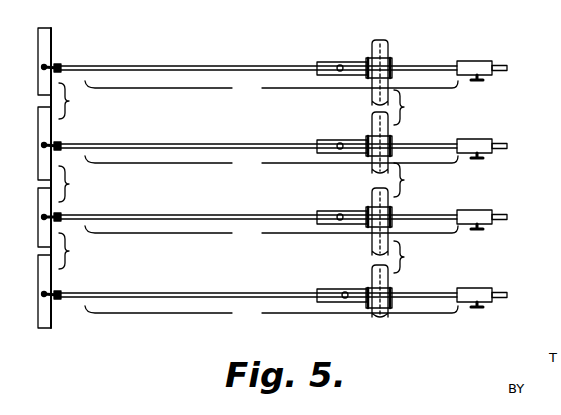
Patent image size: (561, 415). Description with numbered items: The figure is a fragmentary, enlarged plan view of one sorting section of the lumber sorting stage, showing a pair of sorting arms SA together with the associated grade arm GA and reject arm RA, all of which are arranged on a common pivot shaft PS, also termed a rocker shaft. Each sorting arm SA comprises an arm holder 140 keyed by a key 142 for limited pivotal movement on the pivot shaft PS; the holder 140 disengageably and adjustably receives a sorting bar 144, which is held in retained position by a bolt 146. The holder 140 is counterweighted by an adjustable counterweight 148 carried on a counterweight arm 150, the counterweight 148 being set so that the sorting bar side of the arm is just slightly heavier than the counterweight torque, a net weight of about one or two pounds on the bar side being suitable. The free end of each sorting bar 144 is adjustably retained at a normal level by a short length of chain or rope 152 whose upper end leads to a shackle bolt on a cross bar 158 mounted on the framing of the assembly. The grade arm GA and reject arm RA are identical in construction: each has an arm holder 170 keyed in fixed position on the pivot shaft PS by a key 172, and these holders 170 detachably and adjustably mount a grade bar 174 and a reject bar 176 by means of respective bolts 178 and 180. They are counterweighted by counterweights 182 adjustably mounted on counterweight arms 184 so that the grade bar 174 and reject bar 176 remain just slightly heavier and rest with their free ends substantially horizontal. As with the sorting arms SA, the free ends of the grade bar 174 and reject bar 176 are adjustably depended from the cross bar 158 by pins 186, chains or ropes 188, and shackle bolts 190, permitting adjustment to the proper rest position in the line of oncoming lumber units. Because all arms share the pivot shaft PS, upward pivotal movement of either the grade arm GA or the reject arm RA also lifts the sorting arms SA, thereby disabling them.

The arm holder 140 is at (372, 136).
The key 142 is at (396, 140).
The sorting bar 144 is at (213, 144).
The bolt 146 is at (340, 140).
The adjustable counterweight 148 is at (482, 140).
The counterweight arm 150 is at (430, 215).
The chain or rope 152 is at (53, 143).
The cross bar 158 is at (77, 176).
The arm holder 170 is at (370, 58).
The key 172 is at (396, 62).
The grade bar 174 is at (213, 293).
The reject bar 176 is at (210, 66).
The bolt 178 is at (345, 298).
The bolt 180 is at (325, 61).
The counterweight 182 is at (488, 61).
The counterweight arm 184 is at (502, 70).
The pin 186 is at (64, 64).
The chain or rope 188 is at (59, 66).
The shackle bolt 190 is at (47, 63).
The reject arm RA is at (271, 88).
The sorting arm SA is at (271, 198).
The grade arm GA is at (271, 313).
The pivot shaft PS is at (408, 181).